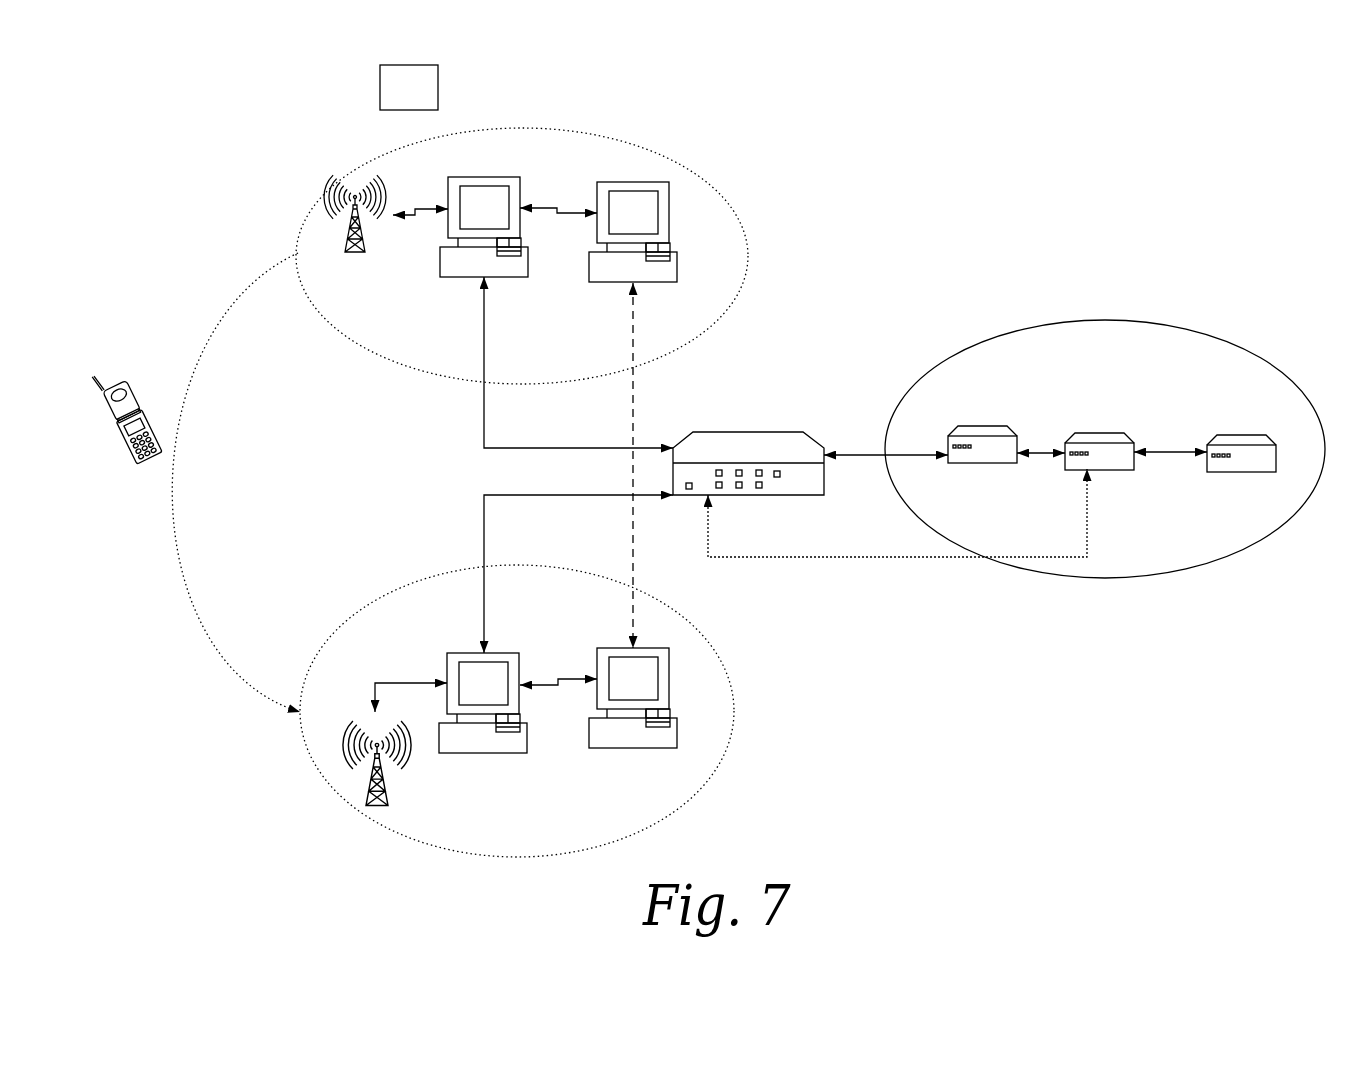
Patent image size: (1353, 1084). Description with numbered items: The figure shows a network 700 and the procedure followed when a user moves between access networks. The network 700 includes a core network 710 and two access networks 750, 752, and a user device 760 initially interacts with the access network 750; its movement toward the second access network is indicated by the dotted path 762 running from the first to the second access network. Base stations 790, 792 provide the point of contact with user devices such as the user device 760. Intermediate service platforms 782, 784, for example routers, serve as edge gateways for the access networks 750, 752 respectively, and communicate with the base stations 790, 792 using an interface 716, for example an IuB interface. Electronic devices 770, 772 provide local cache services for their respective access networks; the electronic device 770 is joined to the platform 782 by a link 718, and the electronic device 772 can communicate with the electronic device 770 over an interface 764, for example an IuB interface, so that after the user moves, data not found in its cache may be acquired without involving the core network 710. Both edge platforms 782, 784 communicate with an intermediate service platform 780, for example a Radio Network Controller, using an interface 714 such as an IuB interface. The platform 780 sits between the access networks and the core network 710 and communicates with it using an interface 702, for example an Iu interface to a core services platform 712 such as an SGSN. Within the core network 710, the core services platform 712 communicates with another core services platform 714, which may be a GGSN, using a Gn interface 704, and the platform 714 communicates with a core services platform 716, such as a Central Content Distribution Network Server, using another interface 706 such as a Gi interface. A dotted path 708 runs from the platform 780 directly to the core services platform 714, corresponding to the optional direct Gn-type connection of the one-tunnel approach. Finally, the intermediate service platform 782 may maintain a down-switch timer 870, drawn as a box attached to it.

The network 700 is at (1057, 180).
The interface 702 is at (886, 442).
The Gn interface 704 is at (1041, 437).
The interface 706 is at (1170, 436).
The signaling path 708 is at (897, 531).
The core network 710 is at (1105, 578).
The core services platform 712 is at (973, 463).
The core services platform / interface 714 is at (1120, 518).
The core services platform / interface 716 is at (1262, 498).
The link between access network nodes 718 is at (558, 193).
The access network 750 is at (400, 433).
The access network 752 is at (385, 915).
The user device 760 is at (140, 468).
The handover path 762 is at (228, 482).
The interface 764 is at (614, 465).
The electronic device 770 is at (645, 183).
The electronic device 772 is at (647, 757).
The intermediate service platform 780 is at (760, 503).
The intermediate service platform 782 is at (500, 177).
The intermediate service platform 784 is at (502, 647).
The base station 790 is at (353, 168).
The base station 792 is at (347, 712).
The down-switch timer 870 is at (485, 188).